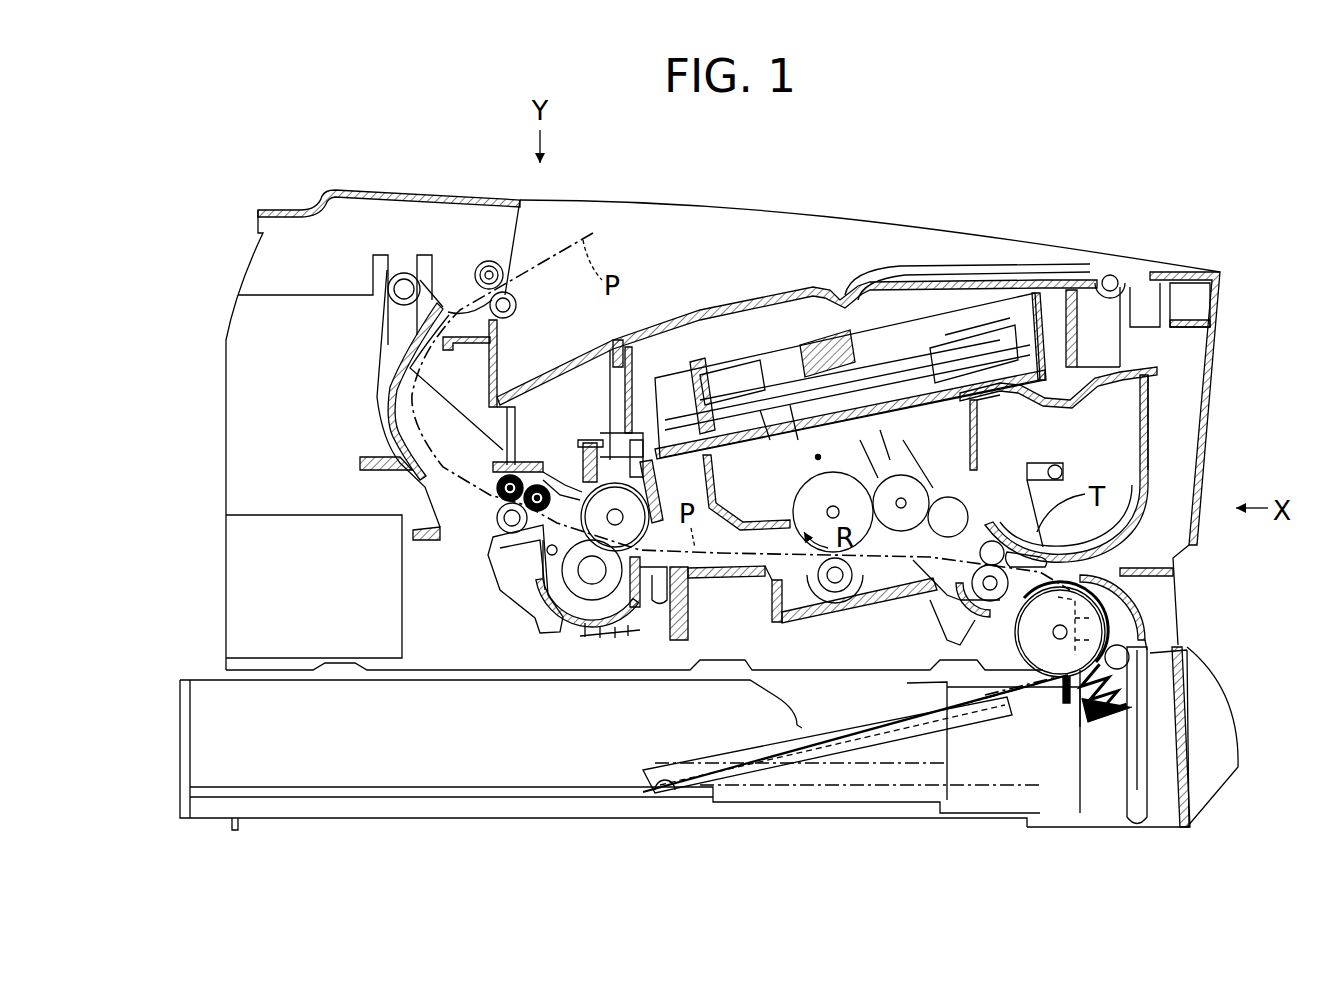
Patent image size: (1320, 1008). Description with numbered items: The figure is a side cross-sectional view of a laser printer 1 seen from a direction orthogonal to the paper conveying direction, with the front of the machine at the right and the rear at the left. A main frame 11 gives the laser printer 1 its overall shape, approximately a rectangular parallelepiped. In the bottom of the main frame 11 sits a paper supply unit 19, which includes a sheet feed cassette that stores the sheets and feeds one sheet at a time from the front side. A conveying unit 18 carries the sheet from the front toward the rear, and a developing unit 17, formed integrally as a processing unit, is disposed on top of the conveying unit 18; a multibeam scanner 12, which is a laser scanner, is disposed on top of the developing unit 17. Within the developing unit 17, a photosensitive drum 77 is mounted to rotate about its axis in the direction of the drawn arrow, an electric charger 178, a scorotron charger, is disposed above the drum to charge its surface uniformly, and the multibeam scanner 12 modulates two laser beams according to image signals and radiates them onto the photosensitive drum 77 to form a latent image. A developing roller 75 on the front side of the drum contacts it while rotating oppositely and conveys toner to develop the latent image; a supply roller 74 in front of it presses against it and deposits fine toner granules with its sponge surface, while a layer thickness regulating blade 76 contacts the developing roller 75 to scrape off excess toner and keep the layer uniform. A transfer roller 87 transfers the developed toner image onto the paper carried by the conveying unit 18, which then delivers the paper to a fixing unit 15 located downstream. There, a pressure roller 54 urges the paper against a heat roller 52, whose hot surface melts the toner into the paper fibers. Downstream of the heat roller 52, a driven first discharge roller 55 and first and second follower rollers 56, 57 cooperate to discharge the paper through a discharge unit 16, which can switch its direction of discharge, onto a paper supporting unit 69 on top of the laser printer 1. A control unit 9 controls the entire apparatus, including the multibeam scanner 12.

The laser printer 1 is at (1130, 238).
The control unit 9 is at (240, 586).
The main frame 11 is at (463, 195).
The multibeam scanner 12 is at (797, 321).
The fixing unit 15 is at (495, 590).
The discharge unit 16 is at (370, 402).
The developing unit 17 is at (1152, 403).
The conveying unit 18 is at (881, 620).
The paper supply unit 19 is at (888, 822).
The heat roller 52 is at (591, 442).
The pressure roller 54 is at (620, 592).
The first discharge roller 55 is at (505, 527).
The first follower roller 56 is at (540, 462).
The second follower roller 57 is at (503, 480).
The paper supporting unit 69 is at (725, 302).
The supply roller 74 is at (972, 525).
The developing roller 75 is at (924, 502).
The layer thickness regulating blade 76 is at (918, 475).
The photosensitive drum 77 is at (797, 514).
The transfer roller 87 is at (825, 600).
The electric charger 178 is at (818, 464).